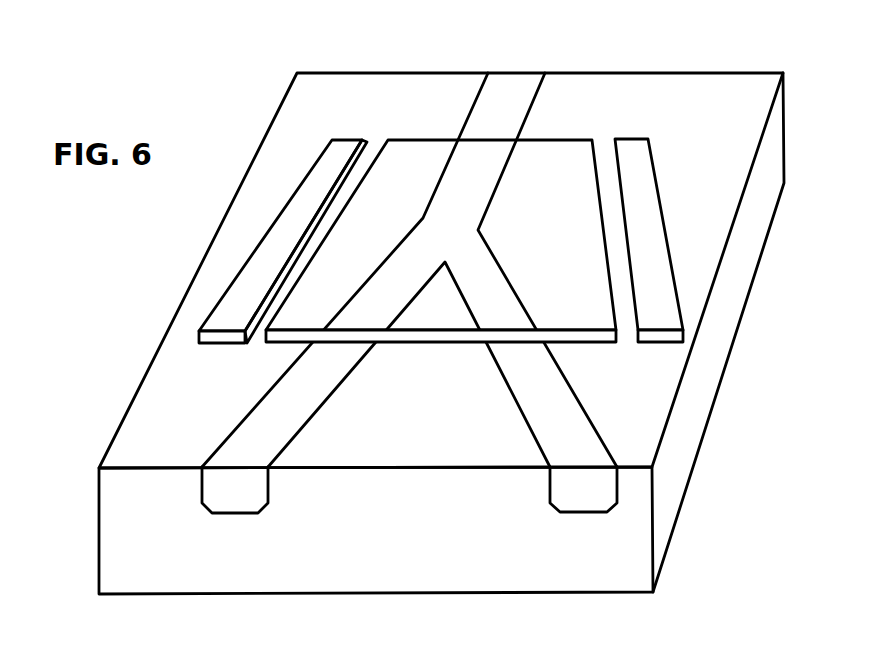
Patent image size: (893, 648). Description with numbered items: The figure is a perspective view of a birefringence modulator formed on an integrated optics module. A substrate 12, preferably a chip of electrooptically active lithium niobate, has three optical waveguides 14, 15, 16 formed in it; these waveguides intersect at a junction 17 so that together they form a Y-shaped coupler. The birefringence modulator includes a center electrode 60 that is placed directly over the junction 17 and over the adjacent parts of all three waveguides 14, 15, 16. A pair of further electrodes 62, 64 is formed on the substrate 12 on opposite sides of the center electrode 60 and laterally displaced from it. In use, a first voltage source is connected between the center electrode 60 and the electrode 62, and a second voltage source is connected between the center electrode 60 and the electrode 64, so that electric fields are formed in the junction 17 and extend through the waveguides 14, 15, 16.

The substrate 12 is at (585, 592).
The optical waveguide 14 is at (477, 107).
The optical waveguide 15 is at (593, 512).
The optical waveguide 16 is at (260, 513).
The junction 17 is at (407, 178).
The electrode 60 is at (425, 345).
The electrode 62 is at (648, 194).
The electrode 64 is at (257, 273).